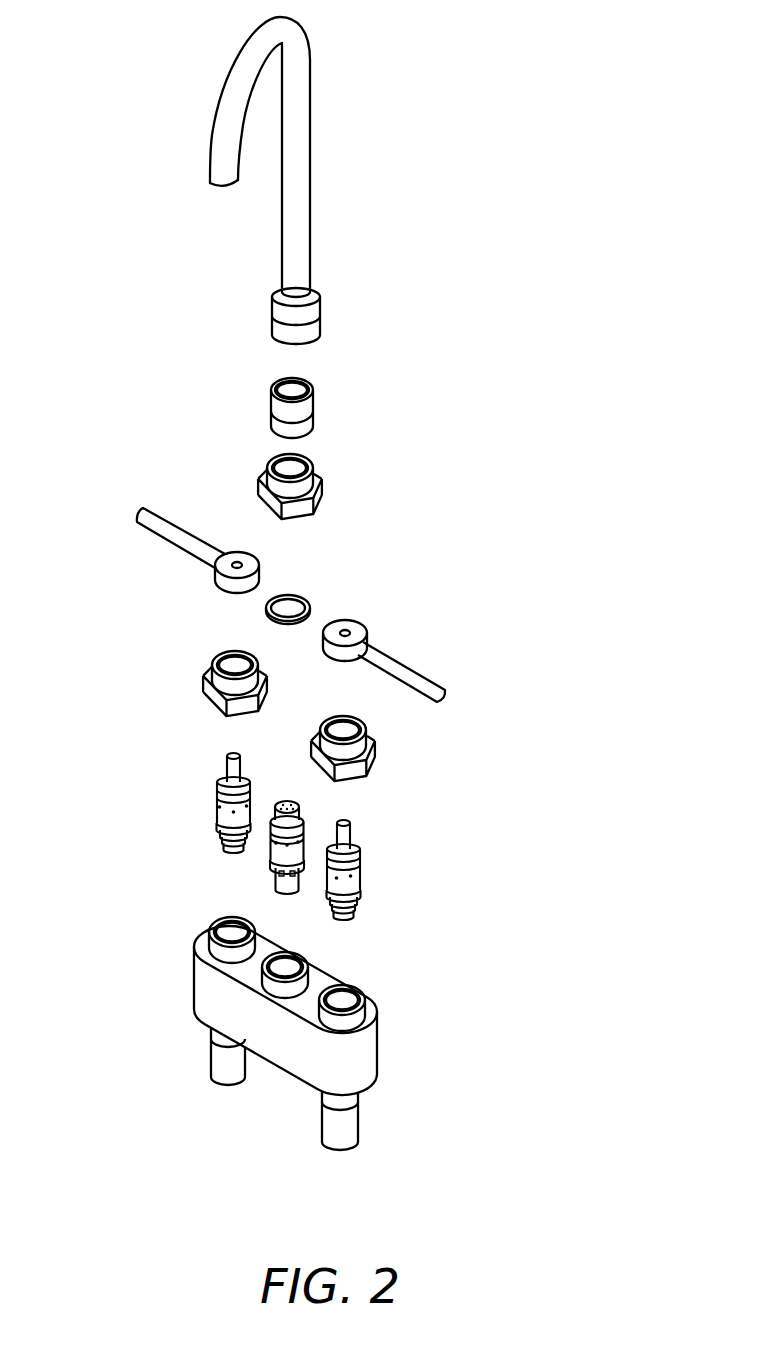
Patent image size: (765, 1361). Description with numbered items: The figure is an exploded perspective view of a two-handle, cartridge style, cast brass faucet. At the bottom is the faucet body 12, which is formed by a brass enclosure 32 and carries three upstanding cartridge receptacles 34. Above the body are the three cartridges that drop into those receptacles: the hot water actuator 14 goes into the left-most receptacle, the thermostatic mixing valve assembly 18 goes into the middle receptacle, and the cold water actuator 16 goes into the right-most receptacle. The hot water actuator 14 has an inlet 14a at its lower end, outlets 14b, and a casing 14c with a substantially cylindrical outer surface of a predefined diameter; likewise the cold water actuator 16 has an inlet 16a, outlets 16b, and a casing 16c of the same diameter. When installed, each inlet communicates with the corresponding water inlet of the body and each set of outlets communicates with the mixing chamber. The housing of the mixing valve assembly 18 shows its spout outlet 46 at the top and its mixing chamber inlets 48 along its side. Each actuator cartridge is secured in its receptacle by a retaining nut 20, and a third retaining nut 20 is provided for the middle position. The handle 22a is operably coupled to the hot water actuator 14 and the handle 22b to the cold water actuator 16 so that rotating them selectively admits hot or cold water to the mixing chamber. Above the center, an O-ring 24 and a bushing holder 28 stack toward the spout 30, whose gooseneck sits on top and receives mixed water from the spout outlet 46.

The faucet body 12 is at (273, 1056).
The hot water actuator 14 is at (202, 790).
The inlet 14a is at (217, 845).
The outlets 14b is at (252, 802).
The casing 14c is at (213, 815).
The cold water actuator 16 is at (383, 898).
The inlet 16a is at (350, 922).
The outlets 16b is at (357, 875).
The casing 16c is at (352, 887).
The thermostatic mixing valve assembly 18 is at (262, 863).
The retaining nut 20 is at (333, 483).
The handle 22a is at (167, 517).
The handle 22b is at (447, 692).
The O-ring 24 is at (317, 603).
The bushing holder 28 is at (318, 408).
The spout 30 is at (300, 87).
The brass enclosure 32 is at (370, 1052).
The cartridge receptacles 34 is at (213, 948).
The spout outlet 46 is at (286, 790).
The mixing chamber inlets 48 is at (305, 840).